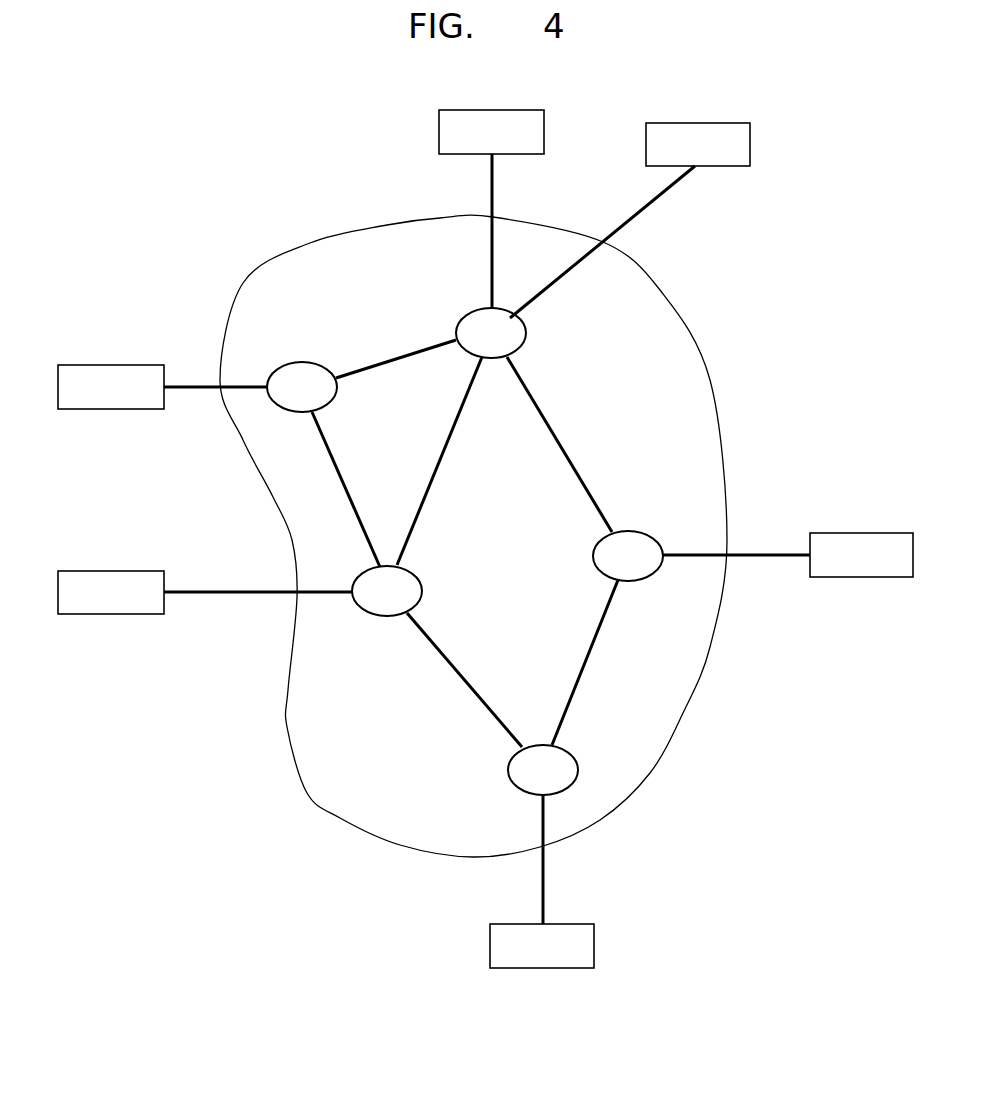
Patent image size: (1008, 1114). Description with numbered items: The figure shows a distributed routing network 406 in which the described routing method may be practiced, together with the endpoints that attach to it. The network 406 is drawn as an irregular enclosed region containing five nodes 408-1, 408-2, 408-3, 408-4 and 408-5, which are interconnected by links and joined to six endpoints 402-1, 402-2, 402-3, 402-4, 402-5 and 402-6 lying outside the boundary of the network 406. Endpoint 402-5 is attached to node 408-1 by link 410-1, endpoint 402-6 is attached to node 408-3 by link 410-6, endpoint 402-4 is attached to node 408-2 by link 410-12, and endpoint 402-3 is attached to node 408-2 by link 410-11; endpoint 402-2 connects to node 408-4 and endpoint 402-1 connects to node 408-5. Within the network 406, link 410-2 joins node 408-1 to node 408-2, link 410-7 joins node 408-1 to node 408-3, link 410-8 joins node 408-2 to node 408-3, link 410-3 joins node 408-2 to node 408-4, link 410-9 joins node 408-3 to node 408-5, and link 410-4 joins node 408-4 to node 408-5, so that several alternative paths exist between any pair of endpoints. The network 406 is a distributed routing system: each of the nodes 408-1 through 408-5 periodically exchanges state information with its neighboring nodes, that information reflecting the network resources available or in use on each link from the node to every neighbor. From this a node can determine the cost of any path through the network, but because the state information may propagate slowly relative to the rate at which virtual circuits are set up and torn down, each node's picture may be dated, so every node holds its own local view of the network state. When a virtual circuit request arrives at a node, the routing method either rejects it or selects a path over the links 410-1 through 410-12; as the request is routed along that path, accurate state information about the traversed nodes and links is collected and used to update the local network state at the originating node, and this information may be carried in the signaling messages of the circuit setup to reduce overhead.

The endpoint 402-1 is at (493, 945).
The endpoint 402-2 is at (858, 533).
The endpoint 402-3 is at (750, 145).
The endpoint 402-4 is at (439, 138).
The endpoint 402-5 is at (115, 365).
The endpoint 402-6 is at (100, 614).
The network 406 is at (668, 713).
The network node 408-1 is at (302, 387).
The network node 408-2 is at (491, 333).
The network node 408-3 is at (387, 591).
The network node 408-4 is at (628, 556).
The network node 408-5 is at (543, 770).
The link 410-1 is at (195, 390).
The link 410-2 is at (382, 365).
The link 410-3 is at (560, 438).
The link 410-4 is at (585, 650).
The link 410-6 is at (213, 595).
The link 410-7 is at (337, 467).
The link 410-8 is at (440, 467).
The link 410-9 is at (452, 670).
The link 410-11 is at (642, 210).
The link 410-12 is at (488, 278).